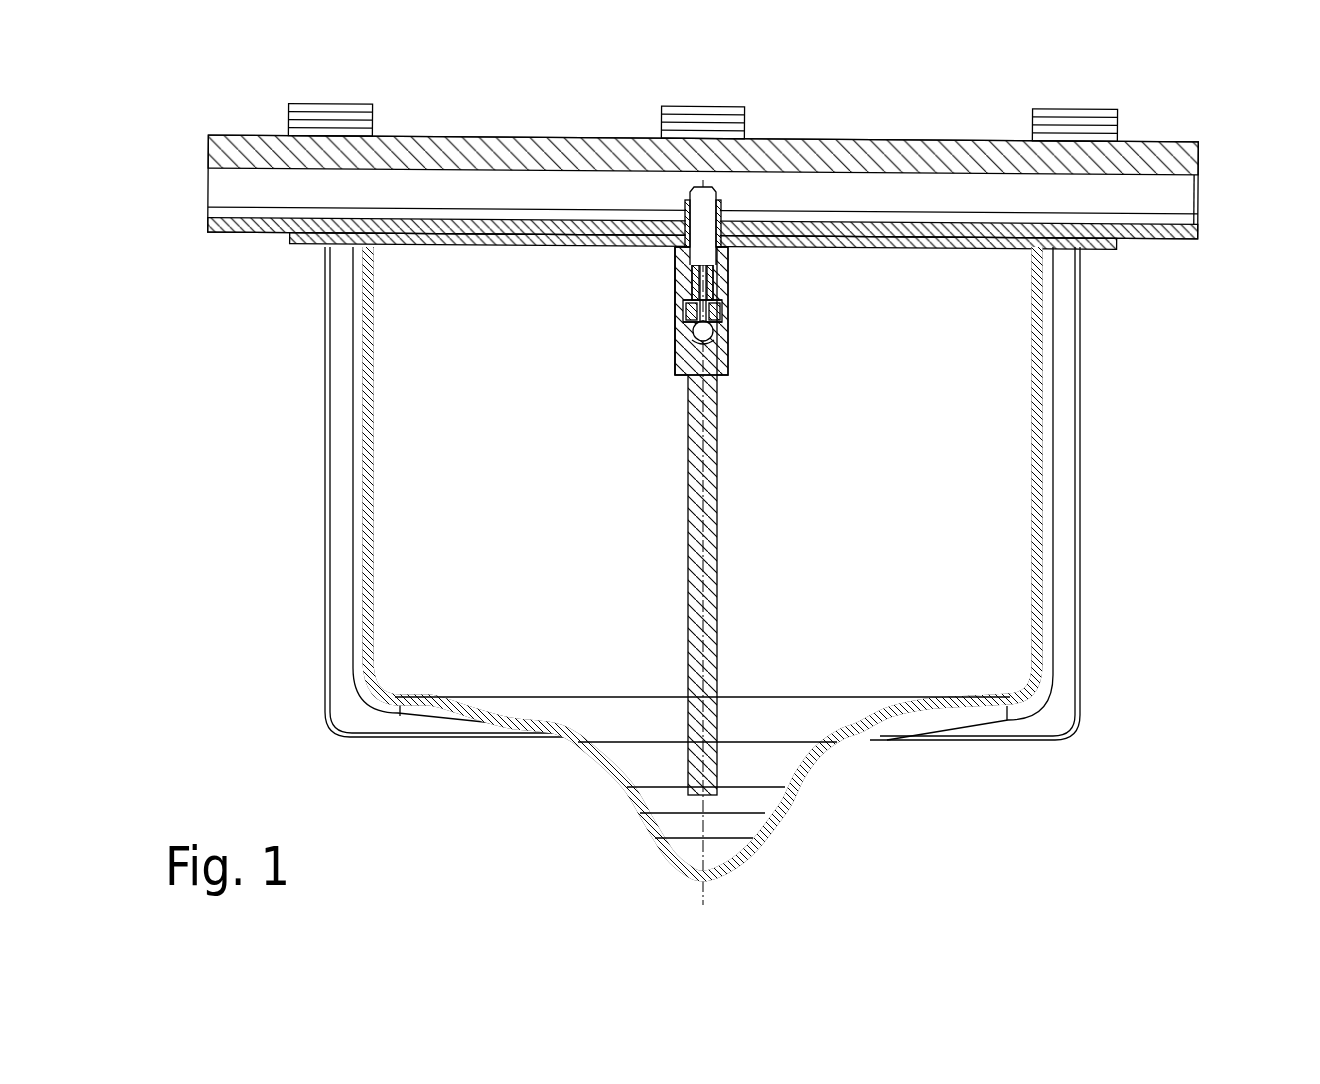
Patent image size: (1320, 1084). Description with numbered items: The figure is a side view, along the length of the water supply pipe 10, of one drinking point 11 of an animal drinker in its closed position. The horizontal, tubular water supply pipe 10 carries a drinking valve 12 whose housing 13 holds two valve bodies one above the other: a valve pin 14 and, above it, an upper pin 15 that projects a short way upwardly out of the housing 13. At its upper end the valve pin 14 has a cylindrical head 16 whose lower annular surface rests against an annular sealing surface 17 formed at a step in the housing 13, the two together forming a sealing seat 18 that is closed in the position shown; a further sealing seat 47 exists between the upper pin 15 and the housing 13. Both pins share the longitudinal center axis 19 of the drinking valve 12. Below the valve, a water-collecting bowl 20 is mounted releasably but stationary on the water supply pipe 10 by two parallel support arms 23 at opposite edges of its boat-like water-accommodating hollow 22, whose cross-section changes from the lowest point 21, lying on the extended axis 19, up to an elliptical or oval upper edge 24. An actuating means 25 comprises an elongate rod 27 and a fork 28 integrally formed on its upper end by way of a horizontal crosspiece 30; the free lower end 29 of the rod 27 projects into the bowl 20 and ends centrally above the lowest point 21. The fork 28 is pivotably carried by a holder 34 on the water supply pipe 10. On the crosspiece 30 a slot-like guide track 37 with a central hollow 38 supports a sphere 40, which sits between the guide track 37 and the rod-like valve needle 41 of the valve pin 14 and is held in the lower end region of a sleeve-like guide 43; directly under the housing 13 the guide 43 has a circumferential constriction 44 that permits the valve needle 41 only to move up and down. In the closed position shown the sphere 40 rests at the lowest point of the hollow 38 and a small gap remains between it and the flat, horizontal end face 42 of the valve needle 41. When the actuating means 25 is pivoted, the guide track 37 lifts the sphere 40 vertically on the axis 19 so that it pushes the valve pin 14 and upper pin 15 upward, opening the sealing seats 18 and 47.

The water supply pipe 10 is at (1185, 197).
The drinking point 11 is at (286, 505).
The drinking valve 12 is at (711, 521).
The housing 13 is at (677, 253).
The valve pin 14 is at (697, 310).
The upper pin 15 is at (707, 195).
The head 16 is at (712, 273).
The sealing surface 17 is at (773, 282).
The sealing seat 18 is at (727, 283).
The longitudinal center axis 19 is at (703, 897).
The water-collecting bowl 20 is at (699, 576).
The lowest point 21 is at (685, 848).
The water-accommodating hollow 22 is at (702, 576).
The support arm 23 is at (699, 576).
The upper edge 24 is at (702, 576).
The actuating means 25 is at (682, 585).
The rod 27 is at (720, 586).
The fork 28 is at (760, 312).
The free lower end 29 is at (688, 797).
The crosspiece 30 is at (720, 362).
The holder 34 is at (665, 127).
The guide track 37 is at (687, 338).
The hollow 38 is at (644, 346).
The sphere 40 is at (708, 330).
The valve needle 41 is at (641, 302).
The end face 42 is at (687, 352).
The guide 43 is at (680, 291).
The constriction 44 is at (728, 300).
The sealing seat 47 is at (722, 222).